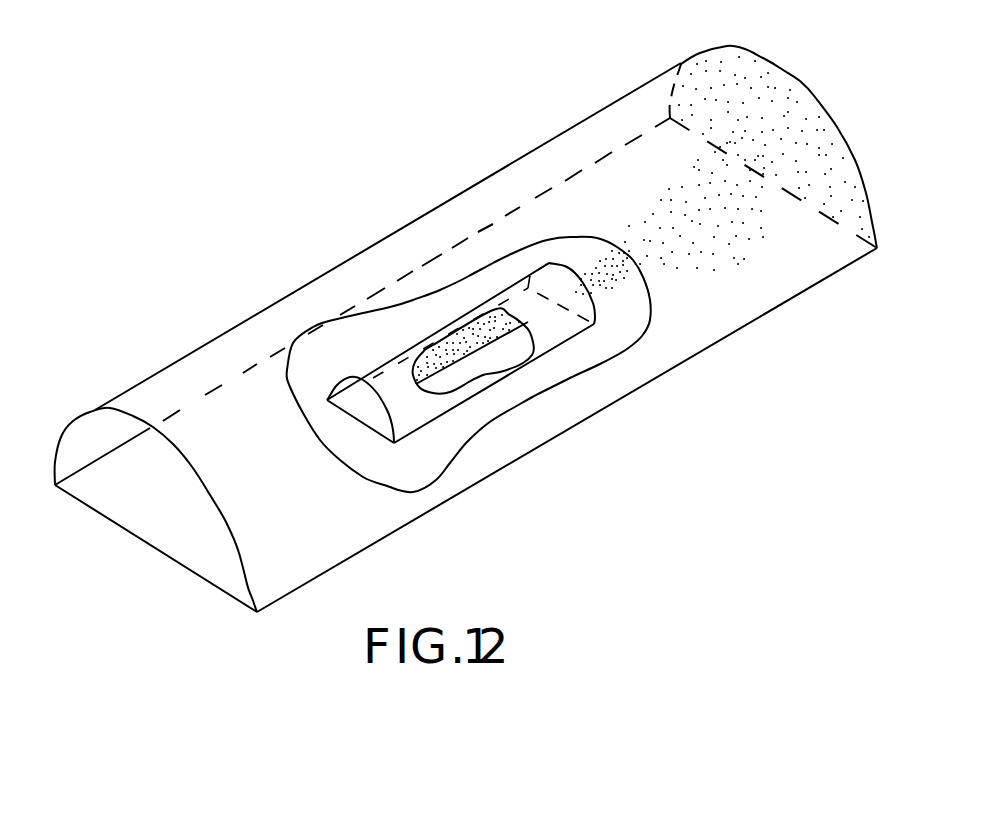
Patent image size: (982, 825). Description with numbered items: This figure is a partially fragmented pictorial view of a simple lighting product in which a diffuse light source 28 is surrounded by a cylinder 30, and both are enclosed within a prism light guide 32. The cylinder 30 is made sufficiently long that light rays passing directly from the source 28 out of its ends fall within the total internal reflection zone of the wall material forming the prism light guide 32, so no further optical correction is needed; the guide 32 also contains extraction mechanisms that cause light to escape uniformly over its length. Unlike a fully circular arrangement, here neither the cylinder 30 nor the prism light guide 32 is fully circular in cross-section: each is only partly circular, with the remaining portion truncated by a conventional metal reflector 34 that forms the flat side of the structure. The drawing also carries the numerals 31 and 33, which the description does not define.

The diffuse light source 28 is at (424, 355).
The cylinder 30 is at (371, 382).
The end surface 31 is at (787, 94).
The prism light guide 32 is at (293, 552).
The adhesive area 33 is at (687, 170).
The conventional metal reflector 34 is at (185, 545).